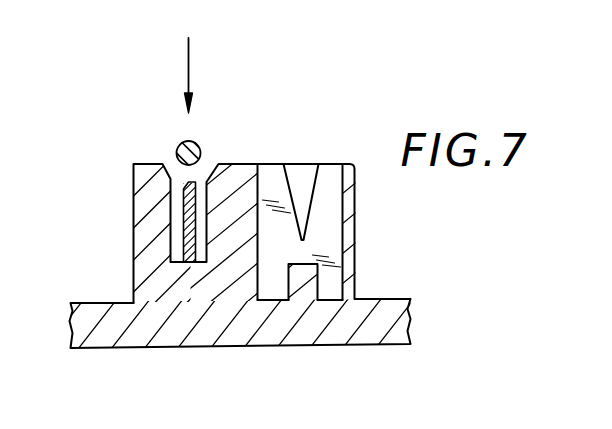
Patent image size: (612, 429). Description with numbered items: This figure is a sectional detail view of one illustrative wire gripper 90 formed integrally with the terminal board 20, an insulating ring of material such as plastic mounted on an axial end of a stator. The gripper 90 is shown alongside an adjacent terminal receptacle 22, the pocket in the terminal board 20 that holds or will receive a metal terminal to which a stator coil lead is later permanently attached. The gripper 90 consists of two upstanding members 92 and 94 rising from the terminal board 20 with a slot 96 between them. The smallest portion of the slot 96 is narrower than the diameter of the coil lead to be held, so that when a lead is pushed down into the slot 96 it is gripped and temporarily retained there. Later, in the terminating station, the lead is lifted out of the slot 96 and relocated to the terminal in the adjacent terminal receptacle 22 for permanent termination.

The terminal board 20 is at (110, 330).
The terminal receptacle 22 is at (372, 232).
The wire gripper 90 is at (184, 229).
The upstanding member 92 is at (143, 163).
The upstanding member 94 is at (237, 163).
The slot 96 is at (192, 203).